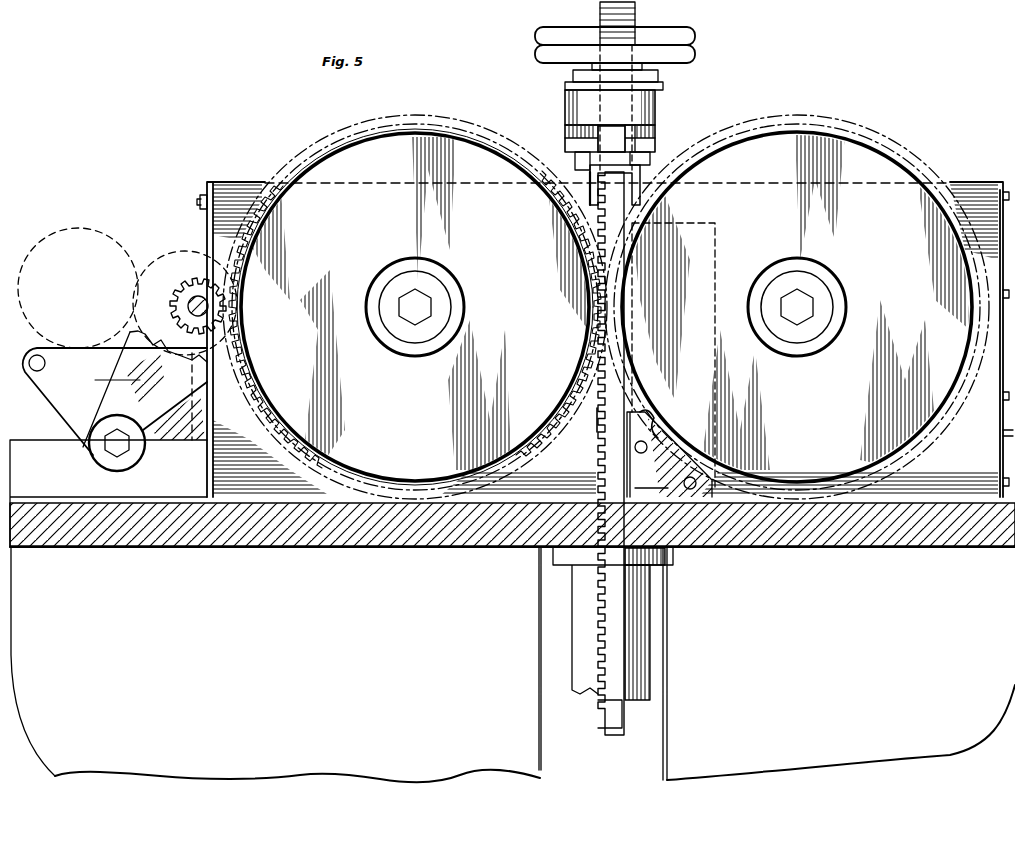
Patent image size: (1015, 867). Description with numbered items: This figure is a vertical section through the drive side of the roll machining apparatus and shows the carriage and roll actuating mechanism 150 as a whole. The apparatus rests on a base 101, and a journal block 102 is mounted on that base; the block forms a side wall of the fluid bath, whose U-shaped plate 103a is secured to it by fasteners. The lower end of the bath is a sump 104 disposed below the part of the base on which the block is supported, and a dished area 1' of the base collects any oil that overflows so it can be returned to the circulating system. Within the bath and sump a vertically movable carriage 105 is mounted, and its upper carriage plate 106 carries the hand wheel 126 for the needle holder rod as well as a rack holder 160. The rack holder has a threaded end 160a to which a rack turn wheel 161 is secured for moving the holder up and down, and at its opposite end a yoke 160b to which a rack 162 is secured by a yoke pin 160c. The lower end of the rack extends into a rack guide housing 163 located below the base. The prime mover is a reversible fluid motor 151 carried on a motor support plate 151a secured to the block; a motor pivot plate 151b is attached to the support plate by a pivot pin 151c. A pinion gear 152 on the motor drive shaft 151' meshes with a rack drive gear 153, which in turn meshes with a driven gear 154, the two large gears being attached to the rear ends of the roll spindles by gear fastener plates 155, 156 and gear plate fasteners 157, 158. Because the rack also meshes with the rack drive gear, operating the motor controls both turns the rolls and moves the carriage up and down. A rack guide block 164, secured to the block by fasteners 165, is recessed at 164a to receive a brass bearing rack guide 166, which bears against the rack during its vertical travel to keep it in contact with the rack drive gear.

The dished area 1' is at (507, 594).
The base 101 is at (443, 536).
The journal block 102 is at (243, 190).
The U-shaped plate 103a is at (203, 216).
The sump 104 is at (668, 605).
The carriage 105 is at (657, 136).
The upper carriage plate 106 is at (652, 110).
The hand wheel 126 is at (694, 30).
The carriage and roll actuating mechanism 150 is at (380, 156).
The fluid motor 151 is at (127, 341).
The motor drive shaft 151' is at (145, 379).
The motor support plate 151a is at (165, 442).
The motor pivot plate 151b is at (110, 402).
The pivot pin 151c is at (112, 458).
The pinion gear 152 is at (193, 298).
The rack drive gear 153 is at (513, 158).
The driven gear 154 is at (618, 307).
The gear fastener plate 155 is at (425, 290).
The gear fastener plate 156 is at (812, 295).
The gear plate fastener 157 is at (423, 312).
The gear plate fastener 158 is at (803, 307).
The rack holder 160 is at (600, 140).
The threaded end 160a is at (633, 22).
The yoke 160b is at (644, 182).
The yoke pin 160c is at (588, 192).
The rack turn wheel 161 is at (694, 50).
The rack 162 is at (620, 228).
The rack guide housing 163 is at (648, 672).
The rack guide block 164 is at (671, 360).
The recess 164a is at (648, 424).
The fasteners 165 is at (695, 490).
The brass bearing rack guide 166 is at (605, 416).